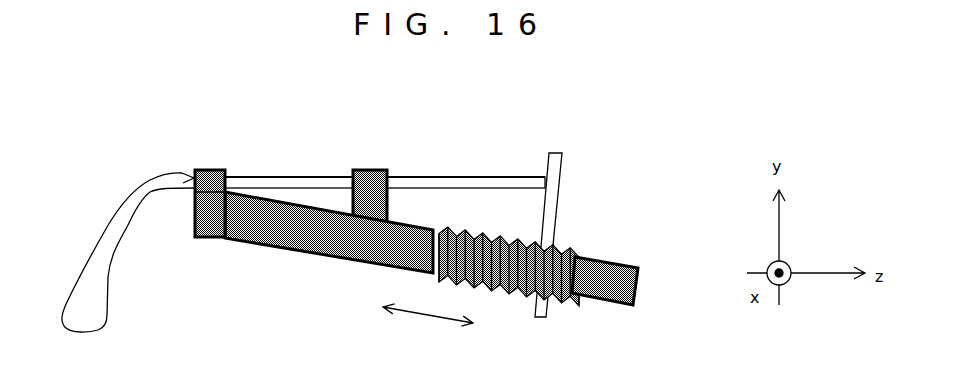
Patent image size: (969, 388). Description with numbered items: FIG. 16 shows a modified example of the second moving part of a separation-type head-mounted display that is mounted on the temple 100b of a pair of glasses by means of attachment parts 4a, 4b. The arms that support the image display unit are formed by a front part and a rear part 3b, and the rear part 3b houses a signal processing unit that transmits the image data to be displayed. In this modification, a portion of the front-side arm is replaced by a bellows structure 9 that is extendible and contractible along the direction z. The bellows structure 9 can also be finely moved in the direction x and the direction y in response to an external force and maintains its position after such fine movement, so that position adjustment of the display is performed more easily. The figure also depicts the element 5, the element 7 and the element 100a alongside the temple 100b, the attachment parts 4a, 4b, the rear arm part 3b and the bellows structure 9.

The temple 7 is at (213, 215).
The temple 100b is at (458, 173).
The wall plate 100a is at (553, 197).
The attachment part 4a is at (372, 168).
The attachment part 4b is at (213, 167).
The rear part of the arm 3b is at (290, 230).
The bellows structure 9 is at (500, 287).
The display unit (image display device 2) 5 is at (602, 297).